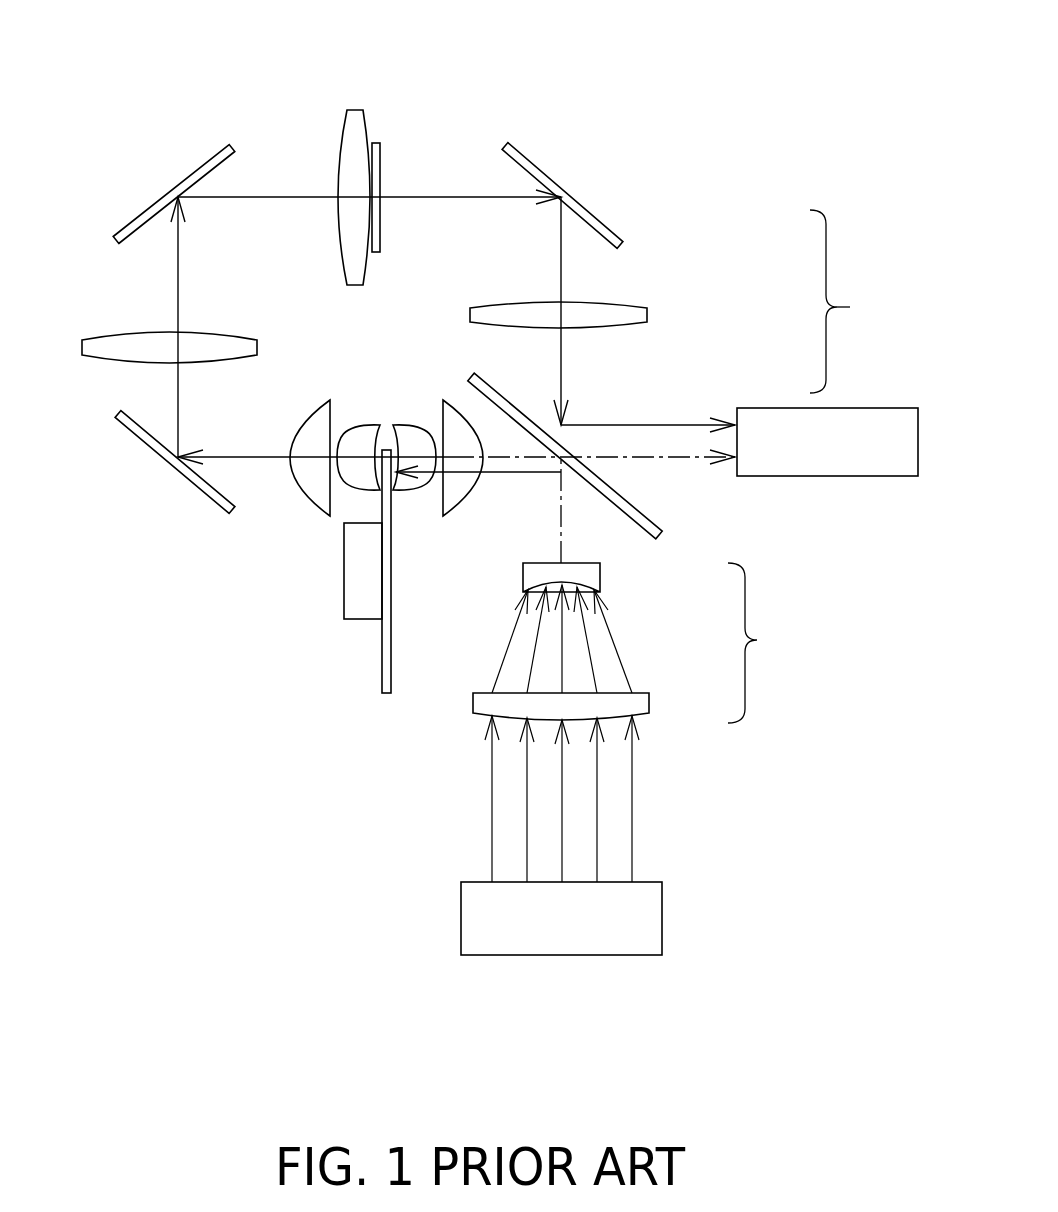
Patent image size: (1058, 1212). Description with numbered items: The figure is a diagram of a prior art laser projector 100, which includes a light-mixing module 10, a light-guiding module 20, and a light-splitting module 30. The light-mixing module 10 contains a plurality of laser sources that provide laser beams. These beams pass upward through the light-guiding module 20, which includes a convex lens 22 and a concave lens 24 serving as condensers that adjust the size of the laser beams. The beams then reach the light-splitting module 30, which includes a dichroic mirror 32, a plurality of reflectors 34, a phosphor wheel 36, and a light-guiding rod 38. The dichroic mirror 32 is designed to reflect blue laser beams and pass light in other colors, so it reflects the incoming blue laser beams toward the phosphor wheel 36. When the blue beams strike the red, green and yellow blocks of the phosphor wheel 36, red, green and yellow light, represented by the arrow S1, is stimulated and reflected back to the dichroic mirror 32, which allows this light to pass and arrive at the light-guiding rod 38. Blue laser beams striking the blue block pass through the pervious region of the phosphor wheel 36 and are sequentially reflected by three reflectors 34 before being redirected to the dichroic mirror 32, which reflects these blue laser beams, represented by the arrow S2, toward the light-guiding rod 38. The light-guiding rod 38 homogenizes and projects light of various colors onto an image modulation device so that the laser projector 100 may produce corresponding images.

The laser projector 100 is at (725, 80).
The light-mixing module 10 is at (662, 917).
The light-guiding module 20 is at (763, 643).
The convex lens 22 is at (650, 700).
The concave lens 24 is at (600, 578).
The light-splitting module 30 is at (845, 301).
The dichroic mirror 32 is at (487, 381).
The reflectors 34 is at (195, 172).
The phosphor wheel 36 is at (389, 448).
The light-guiding rod 38 is at (755, 408).
The arrow representing red, green and yellow light S1 is at (675, 458).
The arrow representing blue laser beams S2 is at (289, 197).